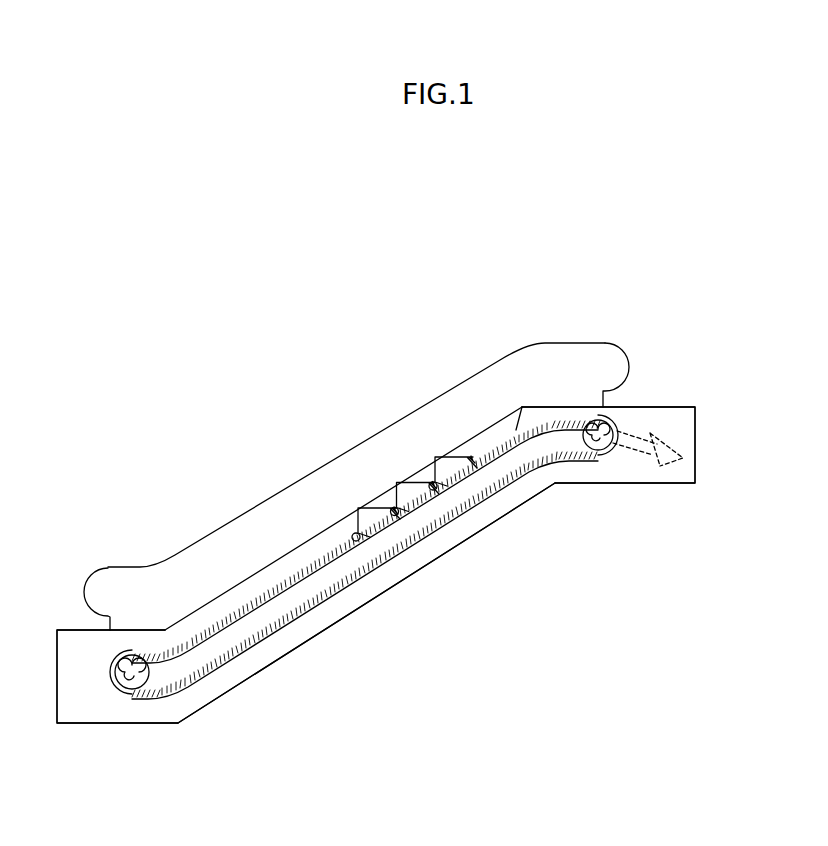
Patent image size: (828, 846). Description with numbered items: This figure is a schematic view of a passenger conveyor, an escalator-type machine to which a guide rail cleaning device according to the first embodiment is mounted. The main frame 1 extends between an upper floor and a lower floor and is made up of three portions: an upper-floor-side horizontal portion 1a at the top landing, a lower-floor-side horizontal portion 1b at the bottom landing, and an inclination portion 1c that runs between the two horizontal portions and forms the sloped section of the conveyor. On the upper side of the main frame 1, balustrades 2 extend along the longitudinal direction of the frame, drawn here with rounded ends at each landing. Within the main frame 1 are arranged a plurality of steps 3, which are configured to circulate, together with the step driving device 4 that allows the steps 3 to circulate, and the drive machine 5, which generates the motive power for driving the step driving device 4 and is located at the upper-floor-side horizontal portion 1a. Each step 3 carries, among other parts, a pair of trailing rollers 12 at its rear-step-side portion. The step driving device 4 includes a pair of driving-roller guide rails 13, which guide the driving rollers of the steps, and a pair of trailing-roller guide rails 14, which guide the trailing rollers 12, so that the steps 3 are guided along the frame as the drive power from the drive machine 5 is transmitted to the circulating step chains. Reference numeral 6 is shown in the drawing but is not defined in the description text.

The main frame 1 is at (101, 724).
The upper-floor-side horizontal portion 1a is at (630, 473).
The lower-floor-side horizontal portion 1b is at (72, 668).
The inclination portion 1c is at (395, 570).
The balustrades 2 is at (295, 513).
The steps 3 is at (467, 438).
The step driving device 4 is at (516, 430).
The drive machine 5 is at (662, 478).
The step rollers 6 is at (343, 540).
The trailing rollers 12 is at (162, 652).
The driving-roller guide rails 13 is at (137, 653).
The trailing-roller guide rails 14 is at (240, 613).